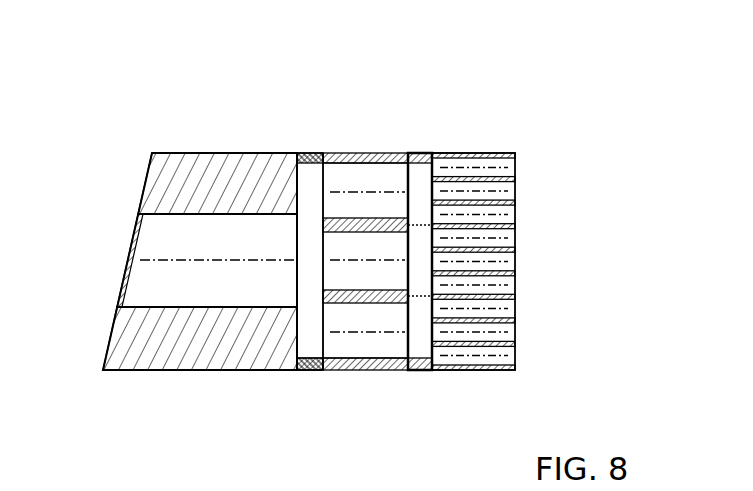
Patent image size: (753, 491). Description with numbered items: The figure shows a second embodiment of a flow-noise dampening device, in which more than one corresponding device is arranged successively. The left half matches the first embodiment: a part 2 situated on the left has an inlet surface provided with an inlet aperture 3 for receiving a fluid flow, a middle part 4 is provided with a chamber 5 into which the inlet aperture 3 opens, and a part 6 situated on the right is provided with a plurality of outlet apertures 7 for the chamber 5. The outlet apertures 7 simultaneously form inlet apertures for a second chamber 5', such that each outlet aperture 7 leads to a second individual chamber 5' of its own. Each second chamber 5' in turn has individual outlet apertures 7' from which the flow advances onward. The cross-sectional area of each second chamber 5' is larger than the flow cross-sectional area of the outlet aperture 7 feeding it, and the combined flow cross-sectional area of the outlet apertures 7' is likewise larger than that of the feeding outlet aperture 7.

The part 2 is at (152, 362).
The inlet aperture 3 is at (128, 280).
The middle part 4 is at (303, 365).
The chamber 5 is at (310, 225).
The second chamber 5' is at (422, 261).
The part 6 is at (338, 366).
The outlet aperture 7 is at (366, 270).
The outlet aperture 7' is at (503, 259).